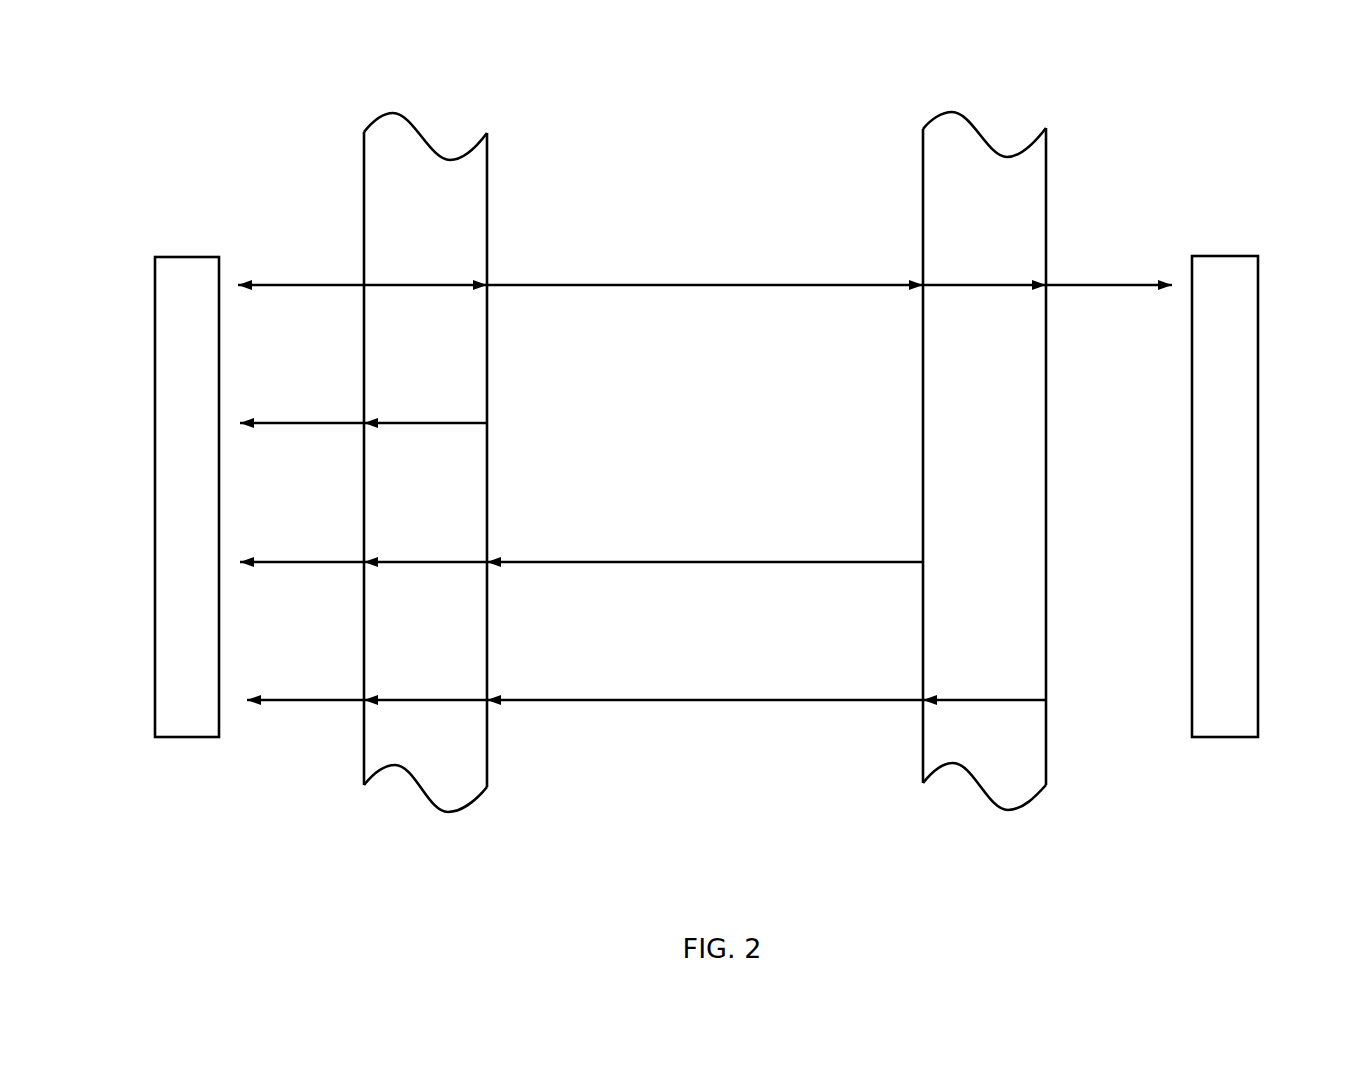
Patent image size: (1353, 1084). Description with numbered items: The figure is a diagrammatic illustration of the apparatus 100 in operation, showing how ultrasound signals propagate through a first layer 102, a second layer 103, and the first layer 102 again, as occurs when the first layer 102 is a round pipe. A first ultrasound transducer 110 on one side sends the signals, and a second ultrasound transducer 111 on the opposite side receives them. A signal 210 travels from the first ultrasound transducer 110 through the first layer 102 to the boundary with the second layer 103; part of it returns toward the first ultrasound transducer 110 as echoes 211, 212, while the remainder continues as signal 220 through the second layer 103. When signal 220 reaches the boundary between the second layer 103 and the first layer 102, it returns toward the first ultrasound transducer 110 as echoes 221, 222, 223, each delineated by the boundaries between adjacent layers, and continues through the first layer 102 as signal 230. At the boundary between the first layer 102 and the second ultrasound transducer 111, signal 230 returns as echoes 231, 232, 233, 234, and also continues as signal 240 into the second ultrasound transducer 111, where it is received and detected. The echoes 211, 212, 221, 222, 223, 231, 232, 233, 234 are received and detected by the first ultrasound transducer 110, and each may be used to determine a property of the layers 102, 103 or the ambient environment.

The apparatus 100 is at (298, 125).
The first layer 102 is at (402, 182).
The second layer 103 is at (666, 182).
The first ultrasound transducer 110 is at (180, 273).
The second ultrasound transducer 111 is at (1225, 275).
The signal 210 is at (440, 280).
The echo 211 is at (453, 415).
The echo 212 is at (340, 420).
The signal 220 is at (640, 280).
The echo 221 is at (618, 558).
The echo 222 is at (453, 558).
The echo 223 is at (335, 558).
The signal 230 is at (997, 280).
The echo 231 is at (1010, 698).
The echo 232 is at (663, 698).
The echo 233 is at (448, 698).
The echo 234 is at (340, 698).
The signal 240 is at (1145, 280).